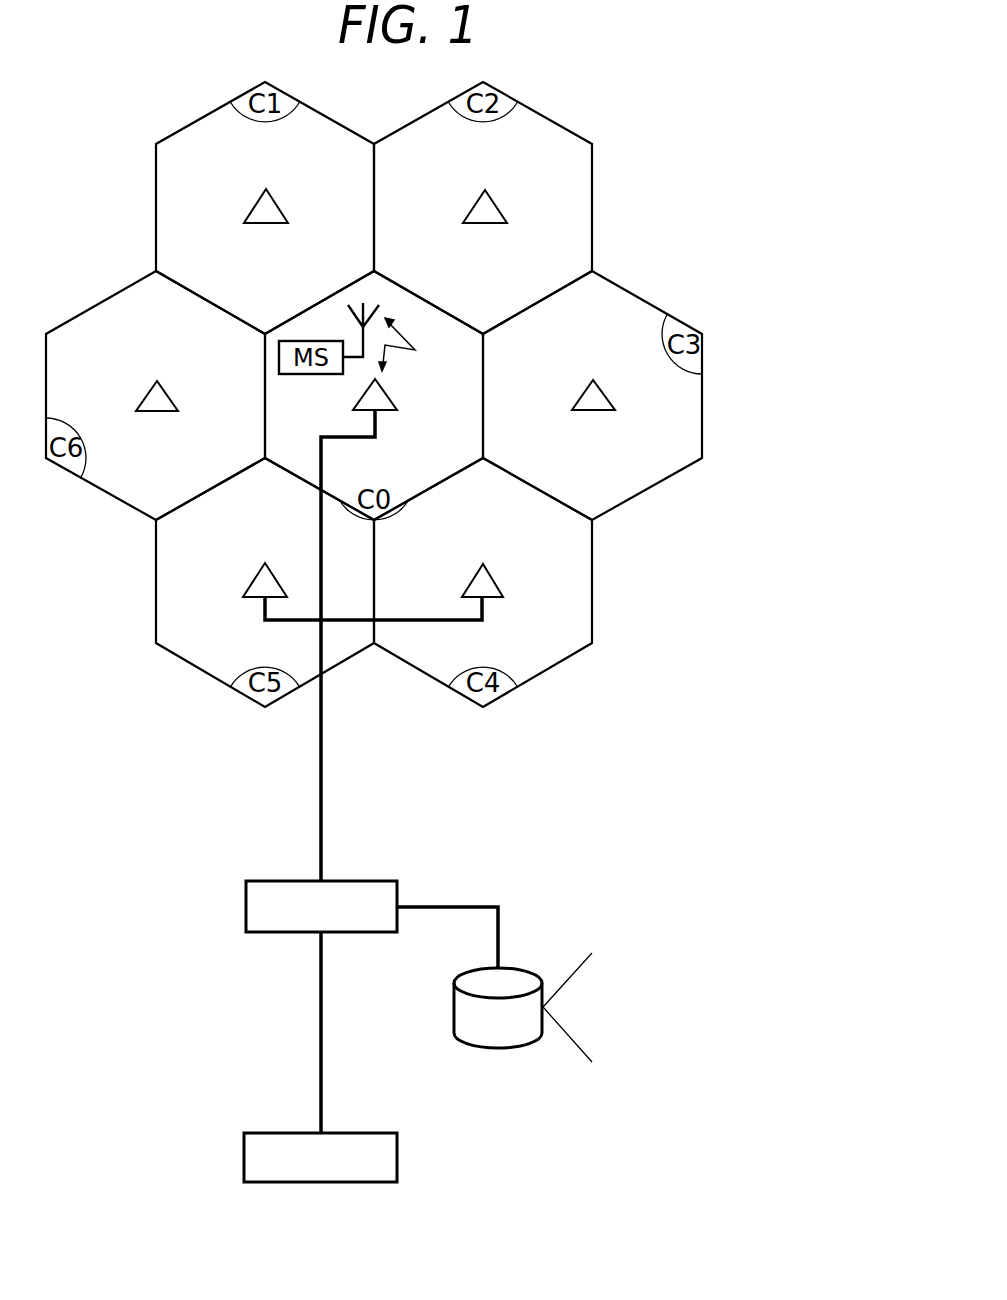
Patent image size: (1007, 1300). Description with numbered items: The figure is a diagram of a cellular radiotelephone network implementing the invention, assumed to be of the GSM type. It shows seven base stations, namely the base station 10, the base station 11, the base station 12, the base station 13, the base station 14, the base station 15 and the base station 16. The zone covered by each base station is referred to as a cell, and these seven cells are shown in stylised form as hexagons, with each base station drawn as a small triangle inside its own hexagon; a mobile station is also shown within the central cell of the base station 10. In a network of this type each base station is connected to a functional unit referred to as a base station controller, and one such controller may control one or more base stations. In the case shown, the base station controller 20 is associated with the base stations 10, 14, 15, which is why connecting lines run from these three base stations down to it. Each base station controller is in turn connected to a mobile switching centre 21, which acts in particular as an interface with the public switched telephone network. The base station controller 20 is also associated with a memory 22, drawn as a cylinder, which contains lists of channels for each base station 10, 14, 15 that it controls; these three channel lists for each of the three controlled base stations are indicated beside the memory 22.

The base station 10 is at (382, 405).
The base station 11 is at (273, 212).
The base station 12 is at (485, 212).
The base station 13 is at (593, 397).
The base station 14 is at (493, 582).
The base station 15 is at (260, 585).
The base station 16 is at (155, 398).
The base station controller 20 is at (253, 908).
The mobile switching centre 21 is at (247, 1155).
The memory 22 is at (465, 1016).